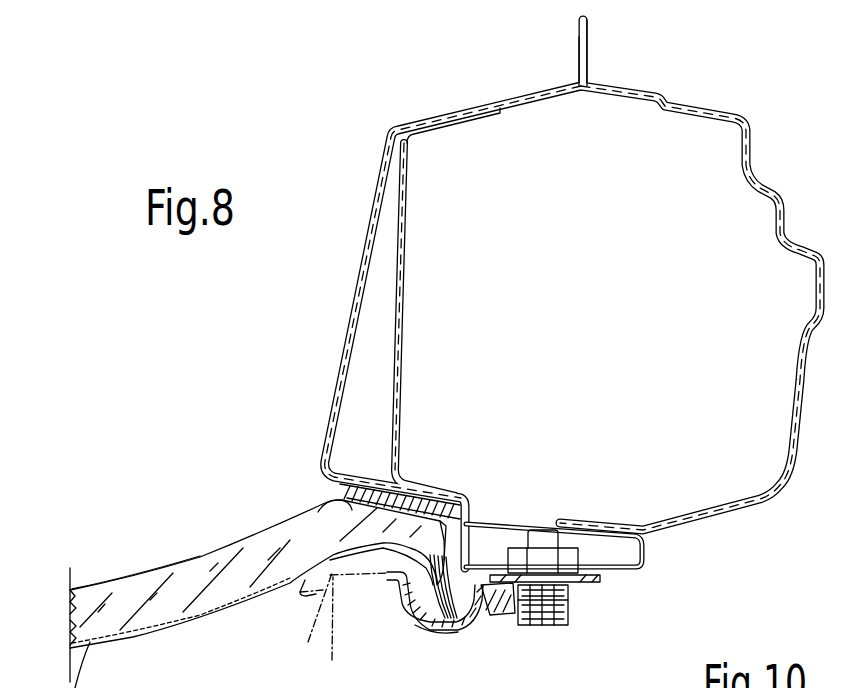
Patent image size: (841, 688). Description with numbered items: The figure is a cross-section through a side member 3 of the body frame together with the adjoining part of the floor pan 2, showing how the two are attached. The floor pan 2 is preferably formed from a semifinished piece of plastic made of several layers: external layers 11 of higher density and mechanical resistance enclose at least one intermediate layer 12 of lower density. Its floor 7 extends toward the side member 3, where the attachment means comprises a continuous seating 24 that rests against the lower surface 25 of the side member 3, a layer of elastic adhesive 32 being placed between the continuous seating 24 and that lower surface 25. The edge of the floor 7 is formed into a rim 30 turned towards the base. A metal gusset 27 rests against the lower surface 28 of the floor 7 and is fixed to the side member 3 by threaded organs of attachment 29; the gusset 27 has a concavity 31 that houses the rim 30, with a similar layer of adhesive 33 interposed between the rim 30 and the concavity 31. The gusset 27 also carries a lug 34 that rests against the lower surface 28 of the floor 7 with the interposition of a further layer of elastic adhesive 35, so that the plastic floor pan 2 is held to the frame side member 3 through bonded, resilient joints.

The side member 3 is at (769, 138).
The floor pan 2 is at (175, 520).
The floor 7 is at (145, 553).
The external layers 11 is at (70, 580).
The intermediate layer 12 is at (70, 621).
The lower surface of the floor 28 is at (160, 638).
The lower surface of side members 25 is at (320, 513).
The layer of elastic adhesive 32 is at (380, 487).
The continuous seating 24 is at (413, 498).
The rim 30 is at (470, 560).
The layer of adhesive 33 is at (408, 600).
The metal gusset 27 is at (416, 634).
The concavity 31 is at (487, 612).
The threaded organs of attachment 29 is at (588, 606).
The lug 34 is at (310, 621).
The layer of elastic adhesive 35 is at (353, 629).